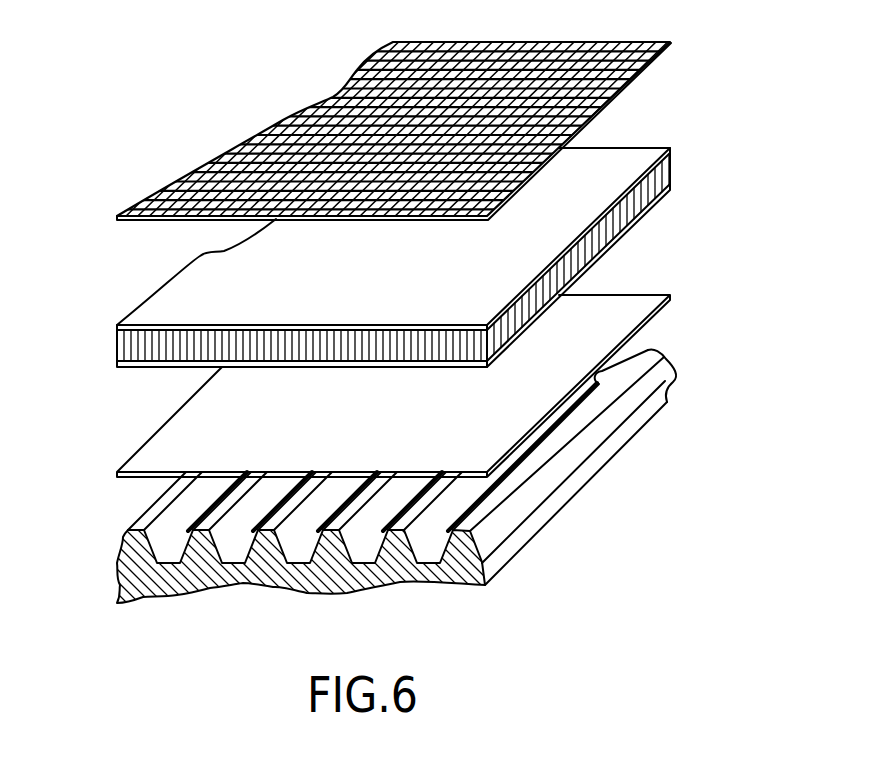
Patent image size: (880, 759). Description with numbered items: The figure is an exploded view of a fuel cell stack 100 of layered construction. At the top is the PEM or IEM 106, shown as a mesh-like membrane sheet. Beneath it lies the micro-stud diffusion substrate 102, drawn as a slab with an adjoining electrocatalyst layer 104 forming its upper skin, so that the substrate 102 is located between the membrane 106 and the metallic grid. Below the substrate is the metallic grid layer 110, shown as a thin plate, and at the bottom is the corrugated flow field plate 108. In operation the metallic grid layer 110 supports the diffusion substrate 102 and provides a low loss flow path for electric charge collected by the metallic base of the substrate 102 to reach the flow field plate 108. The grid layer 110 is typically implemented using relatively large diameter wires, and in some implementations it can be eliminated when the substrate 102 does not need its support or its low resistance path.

The fuel cell stack 100 is at (733, 111).
The micro-stud diffusion substrate 102 is at (117, 347).
The electrocatalyst layer 104 is at (167, 303).
The PEM or IEM 106 is at (243, 155).
The flow field plate 108 is at (122, 545).
The metallic grid layer 110 is at (141, 450).